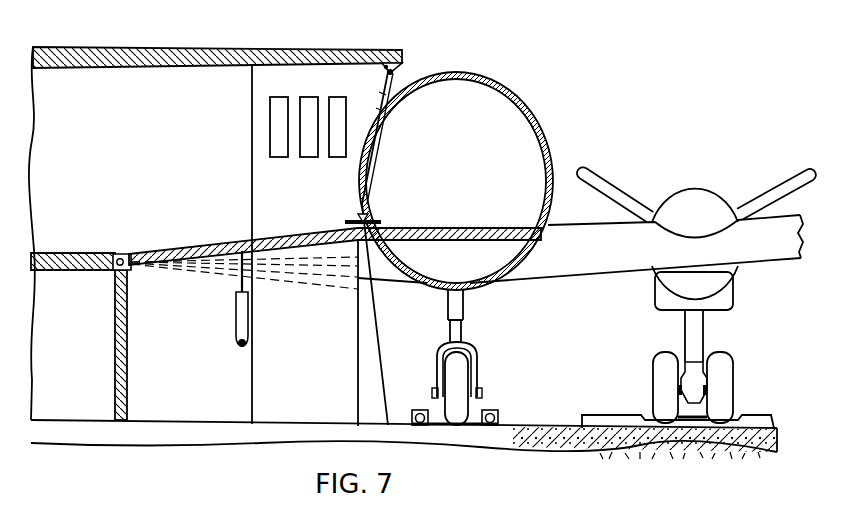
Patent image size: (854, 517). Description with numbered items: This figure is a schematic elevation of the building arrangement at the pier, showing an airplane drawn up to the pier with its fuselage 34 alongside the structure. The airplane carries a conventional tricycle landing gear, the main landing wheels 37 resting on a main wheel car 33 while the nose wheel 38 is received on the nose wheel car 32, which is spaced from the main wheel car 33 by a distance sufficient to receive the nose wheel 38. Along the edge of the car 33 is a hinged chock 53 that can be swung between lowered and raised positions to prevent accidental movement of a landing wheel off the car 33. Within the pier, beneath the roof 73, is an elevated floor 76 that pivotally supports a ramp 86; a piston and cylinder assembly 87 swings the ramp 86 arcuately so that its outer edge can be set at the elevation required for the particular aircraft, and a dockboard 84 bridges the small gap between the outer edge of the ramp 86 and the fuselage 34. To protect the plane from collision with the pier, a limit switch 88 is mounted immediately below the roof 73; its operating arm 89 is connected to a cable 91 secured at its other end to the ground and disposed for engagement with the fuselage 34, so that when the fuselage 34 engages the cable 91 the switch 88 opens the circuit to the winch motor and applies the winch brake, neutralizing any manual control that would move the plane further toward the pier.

The roof 73 is at (364, 54).
The elevated floor 76 is at (92, 258).
The ramp 86 is at (264, 240).
The piston and cylinder assembly 87 is at (238, 311).
The main wheel car 33 is at (738, 420).
The chock 53 is at (606, 421).
The fuselage 34 is at (531, 114).
The cable 91 is at (382, 91).
The limit switch 88 is at (394, 61).
The operating arm 89 is at (394, 69).
The dockboard 84 is at (366, 218).
The main landing wheels 37 is at (723, 362).
The nose wheel 38 is at (458, 386).
The nose wheel car 32 is at (476, 413).